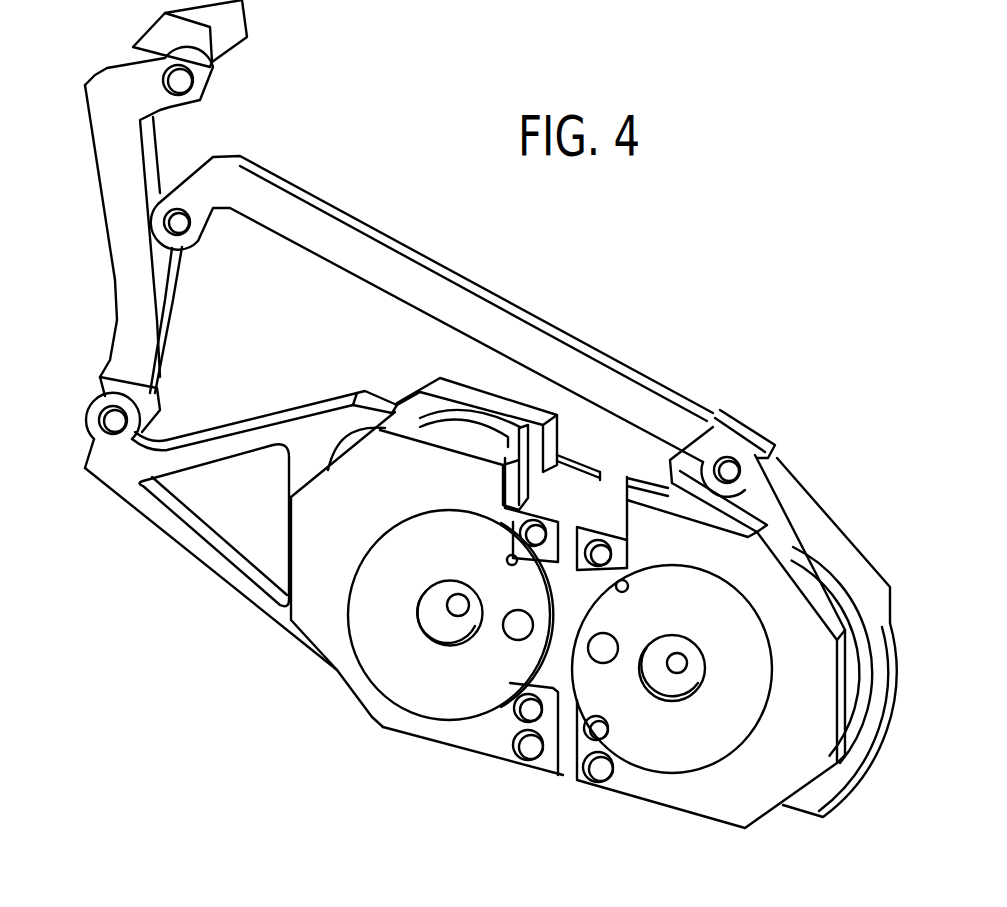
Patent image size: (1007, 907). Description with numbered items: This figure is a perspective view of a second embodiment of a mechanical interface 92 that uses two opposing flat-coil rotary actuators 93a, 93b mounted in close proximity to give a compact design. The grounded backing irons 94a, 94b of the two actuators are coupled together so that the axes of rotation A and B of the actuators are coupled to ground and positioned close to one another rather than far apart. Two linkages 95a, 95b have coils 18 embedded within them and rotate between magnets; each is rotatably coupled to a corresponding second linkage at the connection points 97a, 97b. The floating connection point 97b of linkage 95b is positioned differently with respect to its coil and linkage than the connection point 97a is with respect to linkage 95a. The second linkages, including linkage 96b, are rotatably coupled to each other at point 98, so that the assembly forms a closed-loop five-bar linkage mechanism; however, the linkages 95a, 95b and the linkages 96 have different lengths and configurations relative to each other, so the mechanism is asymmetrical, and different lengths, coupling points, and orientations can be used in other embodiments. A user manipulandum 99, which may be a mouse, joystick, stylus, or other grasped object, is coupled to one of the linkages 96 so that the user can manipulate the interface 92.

The coil 18 is at (353, 433).
The mechanical interface 92 is at (653, 275).
The actuator 93a is at (405, 745).
The actuator 93b is at (835, 505).
The grounded backing iron 94a is at (468, 742).
The grounded backing iron 94b is at (760, 803).
The linkage 95a is at (305, 425).
The linkage 95b is at (798, 483).
The linkage 96 is at (118, 283).
The linkage 96b is at (565, 353).
The connection point 97a is at (76, 422).
The floating connection point 97b is at (748, 410).
The point 98 is at (200, 253).
The user manipulandum 99 is at (258, 23).
The axis of rotation A is at (320, 767).
The axis of rotation B is at (516, 860).